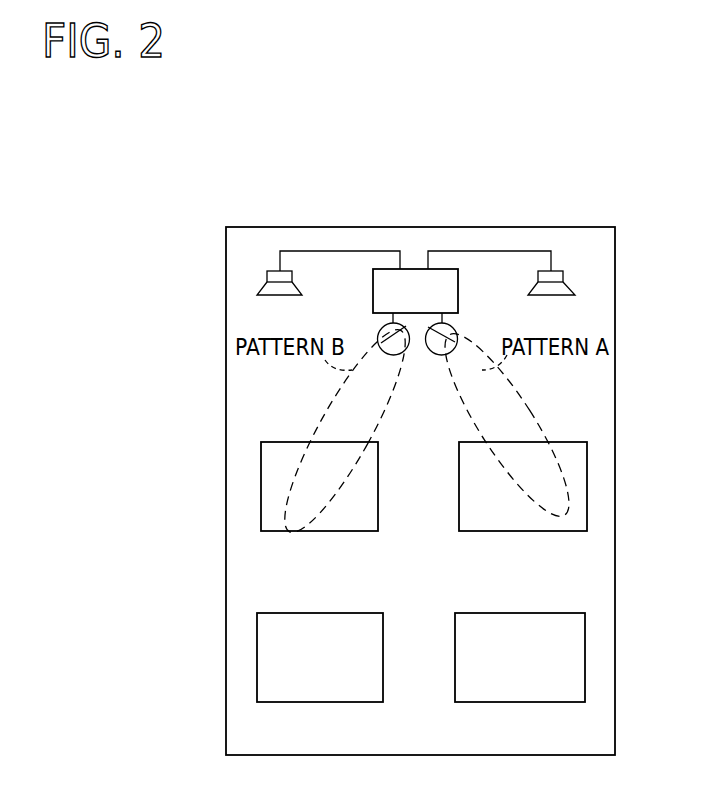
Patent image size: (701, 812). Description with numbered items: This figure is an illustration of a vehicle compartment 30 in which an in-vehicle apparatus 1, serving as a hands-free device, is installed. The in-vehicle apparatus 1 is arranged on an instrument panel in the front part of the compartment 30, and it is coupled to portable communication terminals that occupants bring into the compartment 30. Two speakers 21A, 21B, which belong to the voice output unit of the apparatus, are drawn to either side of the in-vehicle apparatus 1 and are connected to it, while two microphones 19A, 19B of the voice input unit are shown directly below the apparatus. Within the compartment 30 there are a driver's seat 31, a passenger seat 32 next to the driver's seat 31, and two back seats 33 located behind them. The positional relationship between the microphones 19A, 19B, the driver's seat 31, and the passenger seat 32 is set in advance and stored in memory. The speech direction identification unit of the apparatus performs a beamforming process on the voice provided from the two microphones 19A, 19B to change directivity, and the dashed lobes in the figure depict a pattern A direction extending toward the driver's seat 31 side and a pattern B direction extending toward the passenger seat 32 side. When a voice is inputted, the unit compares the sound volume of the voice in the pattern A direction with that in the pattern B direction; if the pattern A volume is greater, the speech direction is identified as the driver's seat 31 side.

The compartment 30 is at (417, 226).
The in-vehicle apparatus 1 is at (458, 290).
The speaker 21A is at (575, 288).
The speaker 21B is at (260, 288).
The microphone 19A is at (457, 330).
The microphone 19B is at (378, 330).
The driver's seat 31 is at (565, 441).
The passenger seat 32 is at (283, 441).
The back seats 33 is at (328, 612).